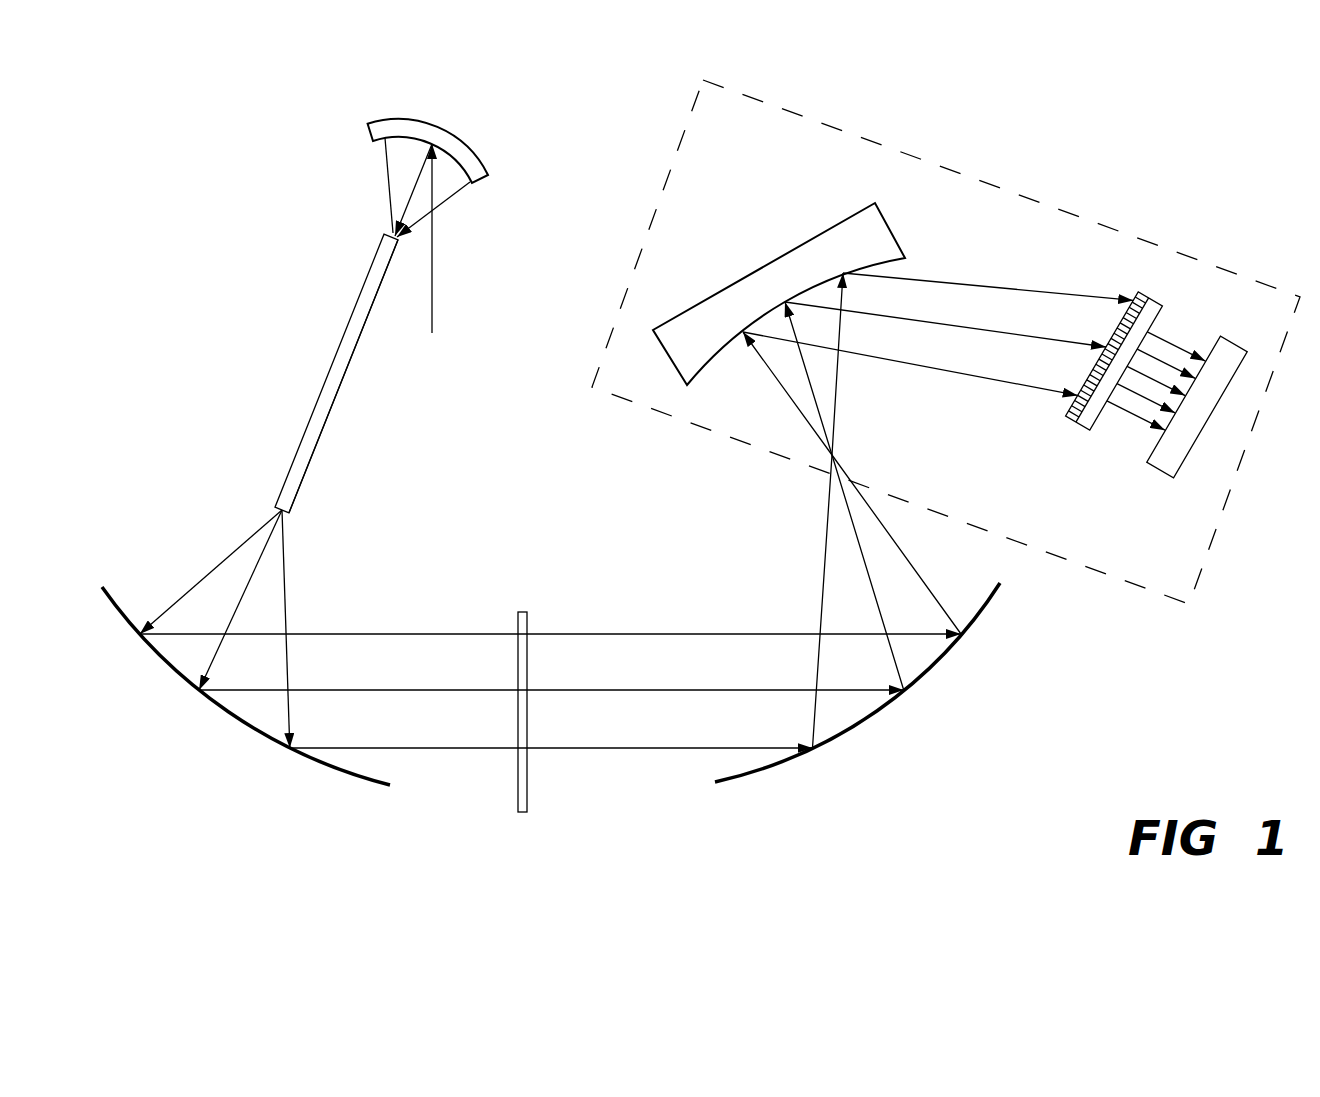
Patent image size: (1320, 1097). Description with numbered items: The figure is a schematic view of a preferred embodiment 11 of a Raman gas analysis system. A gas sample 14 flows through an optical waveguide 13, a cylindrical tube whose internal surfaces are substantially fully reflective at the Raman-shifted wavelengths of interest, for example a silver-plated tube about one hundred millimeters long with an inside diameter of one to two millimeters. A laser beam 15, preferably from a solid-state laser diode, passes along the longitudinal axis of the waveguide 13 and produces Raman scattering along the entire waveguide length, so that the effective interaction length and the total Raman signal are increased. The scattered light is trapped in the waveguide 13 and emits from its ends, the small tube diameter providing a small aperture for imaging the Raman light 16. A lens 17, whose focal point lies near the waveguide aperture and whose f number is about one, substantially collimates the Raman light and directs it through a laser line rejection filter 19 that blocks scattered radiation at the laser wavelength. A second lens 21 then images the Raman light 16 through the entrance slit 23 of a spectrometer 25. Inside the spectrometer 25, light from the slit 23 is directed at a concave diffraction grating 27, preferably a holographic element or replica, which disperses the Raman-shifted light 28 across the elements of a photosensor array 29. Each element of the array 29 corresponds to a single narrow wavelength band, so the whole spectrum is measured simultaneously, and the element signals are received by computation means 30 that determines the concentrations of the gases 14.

The preferred embodiment 11 is at (946, 371).
The optical waveguide 13 is at (333, 373).
The gas sample 14 is at (340, 368).
The laser beam 15 is at (432, 278).
The Raman light 16 is at (213, 572).
The lens 17 is at (246, 725).
The laser line rejection filter 19 is at (528, 802).
The second lens 21 is at (856, 727).
The entrance slit 23 is at (835, 453).
The spectrometer 25 is at (1203, 567).
The concave diffraction grating 27 is at (740, 280).
The Raman-shifted light 28 is at (888, 360).
The photosensor array 29 is at (1150, 296).
The computation means 30 is at (1163, 460).